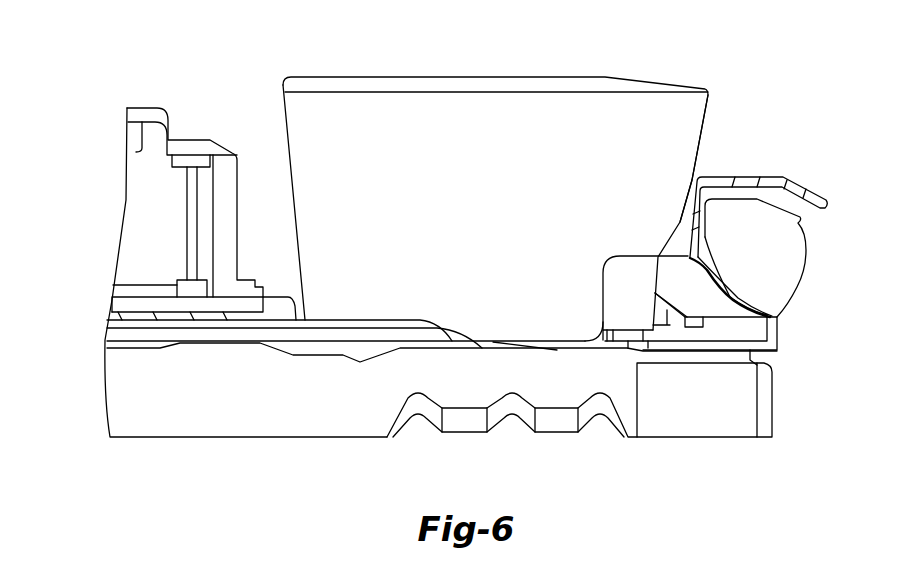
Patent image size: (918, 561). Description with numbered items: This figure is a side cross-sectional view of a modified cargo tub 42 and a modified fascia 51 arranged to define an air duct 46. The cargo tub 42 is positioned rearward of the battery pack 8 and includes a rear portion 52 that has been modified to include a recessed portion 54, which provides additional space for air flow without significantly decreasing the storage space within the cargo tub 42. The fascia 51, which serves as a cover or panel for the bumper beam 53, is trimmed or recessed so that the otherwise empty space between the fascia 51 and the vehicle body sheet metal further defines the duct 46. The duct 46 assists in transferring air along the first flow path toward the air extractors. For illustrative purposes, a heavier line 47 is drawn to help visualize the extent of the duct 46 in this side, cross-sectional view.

The battery pack 8 is at (167, 113).
The cargo tub 42 is at (552, 107).
The duct 46 is at (741, 320).
The heavier line 47 is at (649, 341).
The fascia 51 is at (742, 178).
The rear portion 52 is at (685, 158).
The bumper beam 53 is at (788, 262).
The recessed portion 54 is at (609, 263).